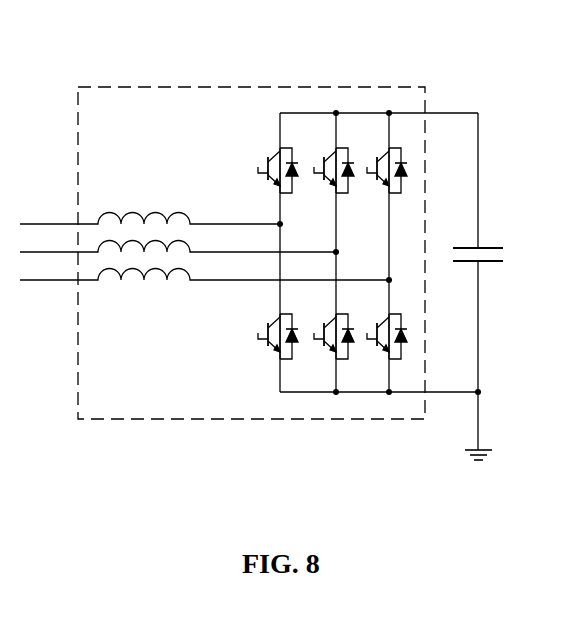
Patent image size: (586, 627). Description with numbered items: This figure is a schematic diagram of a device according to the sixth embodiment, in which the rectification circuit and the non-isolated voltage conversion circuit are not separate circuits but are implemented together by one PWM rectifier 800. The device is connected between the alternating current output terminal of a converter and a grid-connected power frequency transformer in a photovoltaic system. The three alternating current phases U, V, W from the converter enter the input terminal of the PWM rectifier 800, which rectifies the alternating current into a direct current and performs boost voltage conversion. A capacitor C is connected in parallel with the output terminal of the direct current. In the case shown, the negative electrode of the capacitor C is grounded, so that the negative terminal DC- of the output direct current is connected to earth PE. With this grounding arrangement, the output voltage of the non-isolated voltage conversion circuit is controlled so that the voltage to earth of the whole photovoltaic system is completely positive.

The PWM rectifier 800 is at (251, 237).
The negative terminal DC- is at (380, 381).
The phase U input with inductor U is at (150, 212).
The phase V input with inductor V is at (178, 240).
The phase W input with inductor W is at (204, 268).
The capacitor C is at (490, 252).
The protective earth ground PE is at (492, 426).